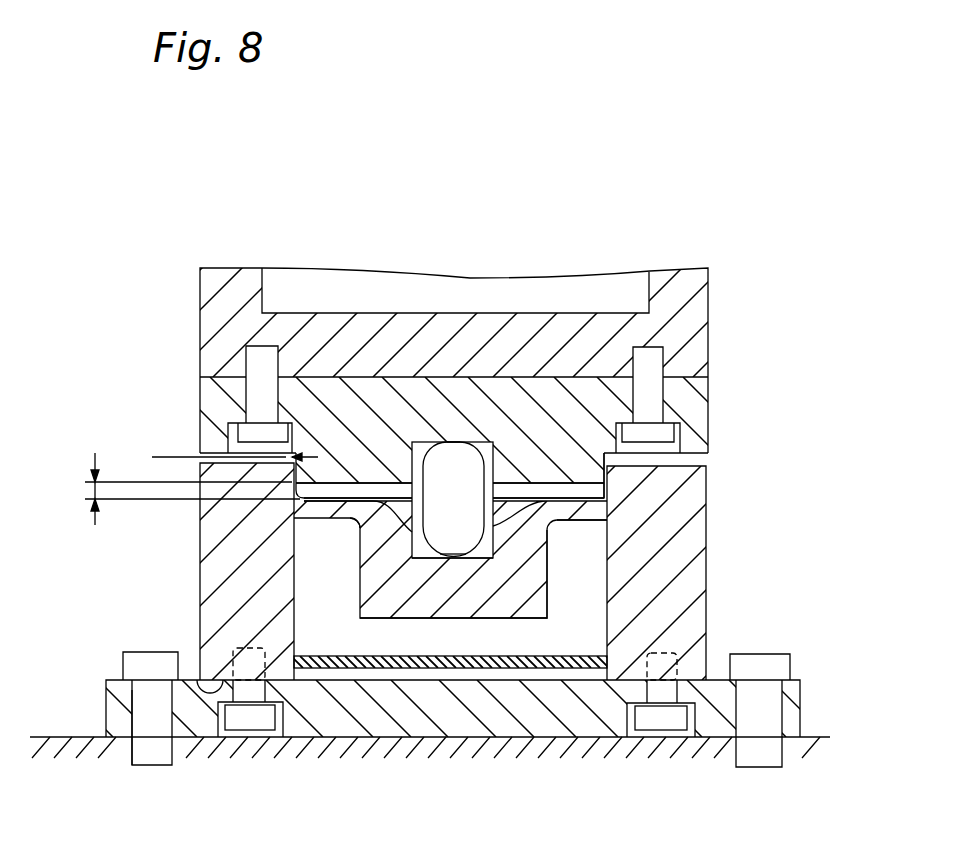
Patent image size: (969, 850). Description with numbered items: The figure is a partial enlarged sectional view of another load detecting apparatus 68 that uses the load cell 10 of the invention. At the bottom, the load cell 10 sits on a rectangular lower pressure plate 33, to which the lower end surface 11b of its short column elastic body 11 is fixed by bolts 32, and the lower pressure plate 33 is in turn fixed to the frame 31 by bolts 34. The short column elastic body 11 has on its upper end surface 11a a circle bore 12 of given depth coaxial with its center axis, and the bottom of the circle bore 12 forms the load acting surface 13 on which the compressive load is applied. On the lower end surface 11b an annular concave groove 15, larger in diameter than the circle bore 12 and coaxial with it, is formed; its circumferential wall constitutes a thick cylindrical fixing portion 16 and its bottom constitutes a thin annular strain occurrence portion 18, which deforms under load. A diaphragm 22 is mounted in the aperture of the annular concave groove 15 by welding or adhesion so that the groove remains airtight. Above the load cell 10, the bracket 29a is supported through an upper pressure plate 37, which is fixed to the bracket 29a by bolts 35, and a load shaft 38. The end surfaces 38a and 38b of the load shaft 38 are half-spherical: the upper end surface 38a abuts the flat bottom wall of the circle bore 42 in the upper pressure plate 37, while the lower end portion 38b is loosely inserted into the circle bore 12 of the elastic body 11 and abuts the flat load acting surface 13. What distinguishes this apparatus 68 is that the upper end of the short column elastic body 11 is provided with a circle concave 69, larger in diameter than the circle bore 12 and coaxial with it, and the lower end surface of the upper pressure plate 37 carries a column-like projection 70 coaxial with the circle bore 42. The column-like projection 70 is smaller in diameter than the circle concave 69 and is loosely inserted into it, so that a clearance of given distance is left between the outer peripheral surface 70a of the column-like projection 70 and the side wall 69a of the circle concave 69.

The load detecting apparatus 68 is at (752, 262).
The bracket 29a is at (212, 306).
The upper pressure plate 37 is at (698, 392).
The column-like projection 70 is at (606, 487).
The outer peripheral surface of the column-like projection 70a is at (604, 460).
The bolts 35 is at (258, 367).
The circle bore 42 is at (420, 547).
The load shaft 38 is at (492, 472).
The upper end surface of the load shaft 38a is at (478, 468).
The lower end portion of the load shaft 38b is at (482, 560).
The load cell 10 is at (716, 606).
The fixing portion 16 is at (700, 560).
The short column elastic body 11 is at (332, 506).
The upper end surface 11a is at (305, 525).
The lower end surface 11b is at (197, 680).
The circle bore 12 is at (378, 510).
The load acting surface 13 is at (418, 562).
The strain occurrence portion 18 is at (587, 522).
The annular concave groove 15 is at (585, 620).
The circle concave 69 is at (560, 501).
The side wall of the circle concave 69a is at (310, 503).
The diaphragm 22 is at (388, 660).
The frame 31 is at (83, 737).
The bolts 32 is at (250, 720).
The lower pressure plate 33 is at (128, 690).
The bolts 34 is at (117, 665).